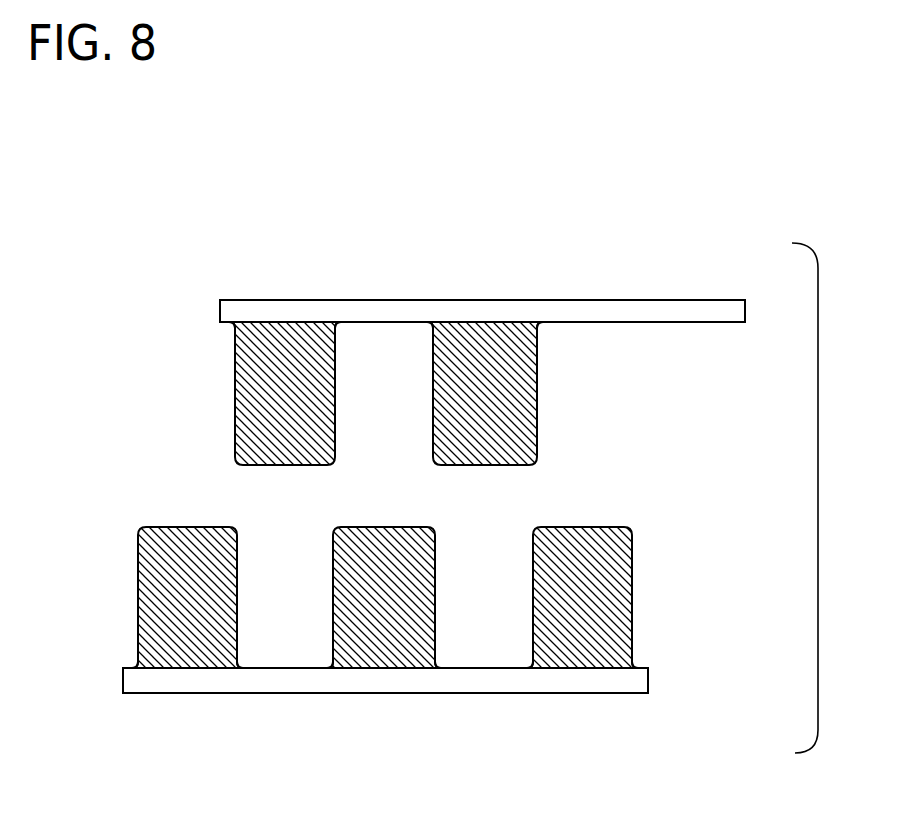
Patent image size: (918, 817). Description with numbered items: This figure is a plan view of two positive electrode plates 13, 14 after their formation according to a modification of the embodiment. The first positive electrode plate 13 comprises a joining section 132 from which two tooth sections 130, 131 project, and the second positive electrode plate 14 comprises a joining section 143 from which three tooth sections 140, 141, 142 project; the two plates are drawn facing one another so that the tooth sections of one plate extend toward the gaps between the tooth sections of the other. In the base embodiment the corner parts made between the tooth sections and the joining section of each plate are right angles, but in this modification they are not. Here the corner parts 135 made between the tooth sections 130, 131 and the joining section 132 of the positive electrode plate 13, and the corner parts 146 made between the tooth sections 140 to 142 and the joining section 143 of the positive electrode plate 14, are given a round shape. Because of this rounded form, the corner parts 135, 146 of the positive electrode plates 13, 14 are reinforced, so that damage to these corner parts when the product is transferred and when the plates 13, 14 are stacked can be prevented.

The positive electrode plate 13 is at (485, 307).
The joining section 132 is at (634, 307).
The tooth section 130 is at (235, 428).
The tooth section 131 is at (433, 428).
The corner part 135 is at (235, 323).
The positive electrode plate 14 is at (377, 695).
The joining section 143 is at (518, 695).
The tooth section 140 is at (138, 585).
The tooth section 141 is at (333, 585).
The tooth section 142 is at (533, 585).
The corner part 146 is at (136, 665).